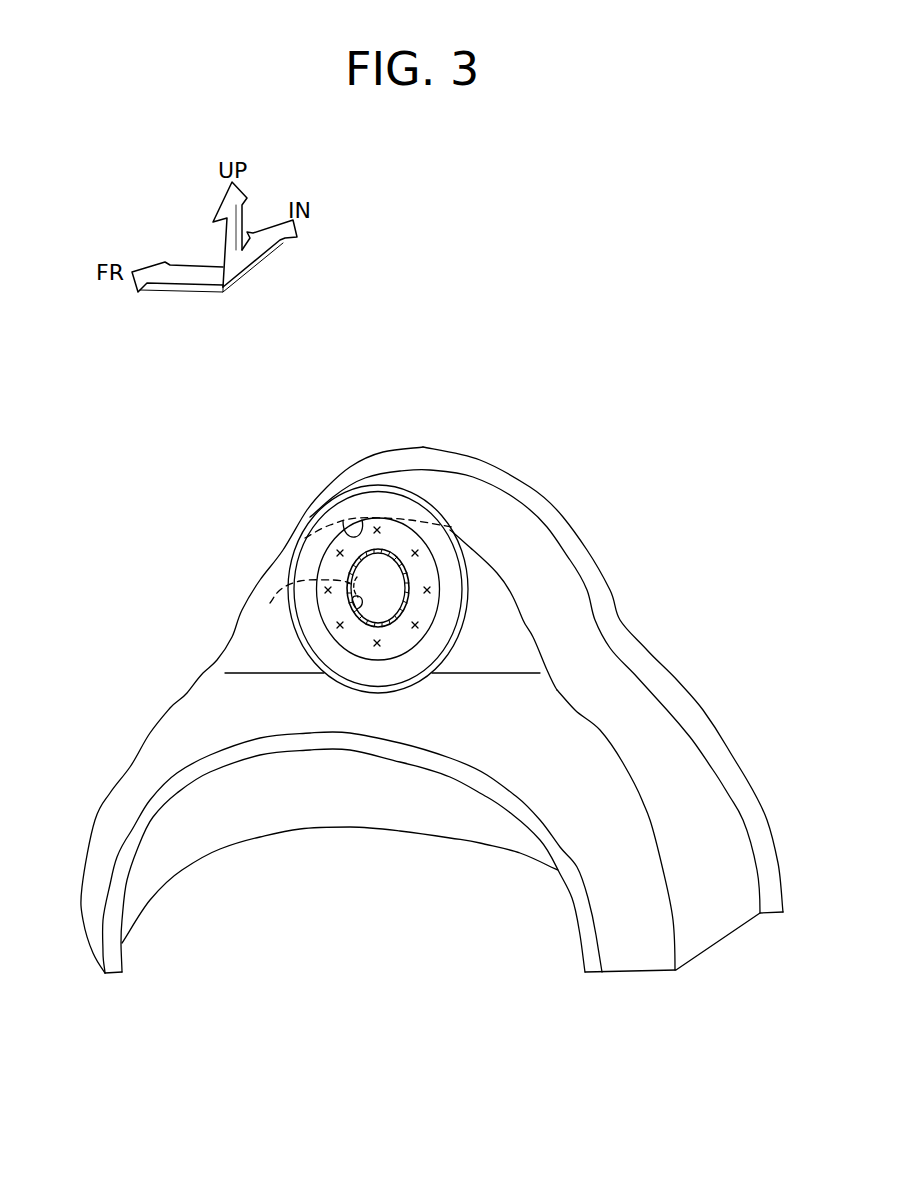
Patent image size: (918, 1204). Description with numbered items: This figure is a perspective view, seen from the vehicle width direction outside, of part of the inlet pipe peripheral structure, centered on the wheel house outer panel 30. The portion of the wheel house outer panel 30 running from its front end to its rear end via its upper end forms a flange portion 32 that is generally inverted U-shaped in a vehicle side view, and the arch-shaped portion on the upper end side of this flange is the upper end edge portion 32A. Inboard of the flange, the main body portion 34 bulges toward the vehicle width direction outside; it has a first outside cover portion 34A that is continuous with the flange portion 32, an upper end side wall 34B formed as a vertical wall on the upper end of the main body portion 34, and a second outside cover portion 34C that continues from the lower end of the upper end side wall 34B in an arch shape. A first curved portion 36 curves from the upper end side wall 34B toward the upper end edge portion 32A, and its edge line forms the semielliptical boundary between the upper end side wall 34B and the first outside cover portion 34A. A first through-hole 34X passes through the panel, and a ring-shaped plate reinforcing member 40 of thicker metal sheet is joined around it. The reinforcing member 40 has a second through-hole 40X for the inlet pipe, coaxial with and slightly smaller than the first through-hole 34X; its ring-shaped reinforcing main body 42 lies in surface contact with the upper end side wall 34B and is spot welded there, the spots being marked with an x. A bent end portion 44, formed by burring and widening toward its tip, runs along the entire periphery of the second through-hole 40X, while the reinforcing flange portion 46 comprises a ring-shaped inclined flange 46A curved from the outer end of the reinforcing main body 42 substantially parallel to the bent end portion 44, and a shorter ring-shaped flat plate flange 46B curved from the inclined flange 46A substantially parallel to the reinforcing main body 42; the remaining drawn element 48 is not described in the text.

The wheel house outer panel 30 is at (104, 711).
The flange portion 32 is at (545, 520).
The upper end edge portion 32A is at (478, 473).
The main body portion 34 is at (187, 664).
The first outside cover portion 34A is at (567, 612).
The upper end side wall 34B is at (503, 657).
The second outside cover portion 34C is at (300, 715).
The first through-hole 34X is at (382, 641).
The first curved portion 36 is at (490, 565).
The reinforcing member 40 is at (278, 637).
The second through-hole 40X is at (355, 607).
The reinforcing main body 42 is at (355, 642).
The bent end portion 44 is at (373, 627).
The reinforcing flange portion 46 is at (408, 663).
The inclined flange 46A is at (437, 638).
The flat plate flange 46B is at (425, 675).
The reinforcement 48 is at (343, 528).